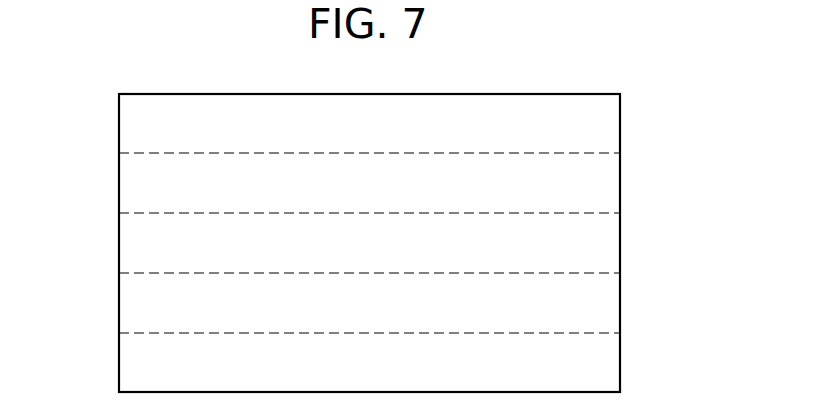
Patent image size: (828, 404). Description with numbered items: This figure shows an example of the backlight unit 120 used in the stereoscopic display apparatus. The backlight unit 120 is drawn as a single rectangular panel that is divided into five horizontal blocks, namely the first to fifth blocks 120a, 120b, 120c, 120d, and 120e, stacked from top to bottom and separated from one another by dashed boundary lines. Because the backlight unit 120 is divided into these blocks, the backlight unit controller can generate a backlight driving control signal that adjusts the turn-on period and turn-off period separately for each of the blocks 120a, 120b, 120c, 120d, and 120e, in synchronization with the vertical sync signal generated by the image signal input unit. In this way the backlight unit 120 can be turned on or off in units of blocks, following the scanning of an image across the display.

The backlight unit 120 is at (119, 243).
The first block 120a is at (620, 126).
The second block 120b is at (620, 186).
The third block 120c is at (620, 246).
The fourth block 120d is at (620, 306).
The fifth block 120e is at (620, 366).